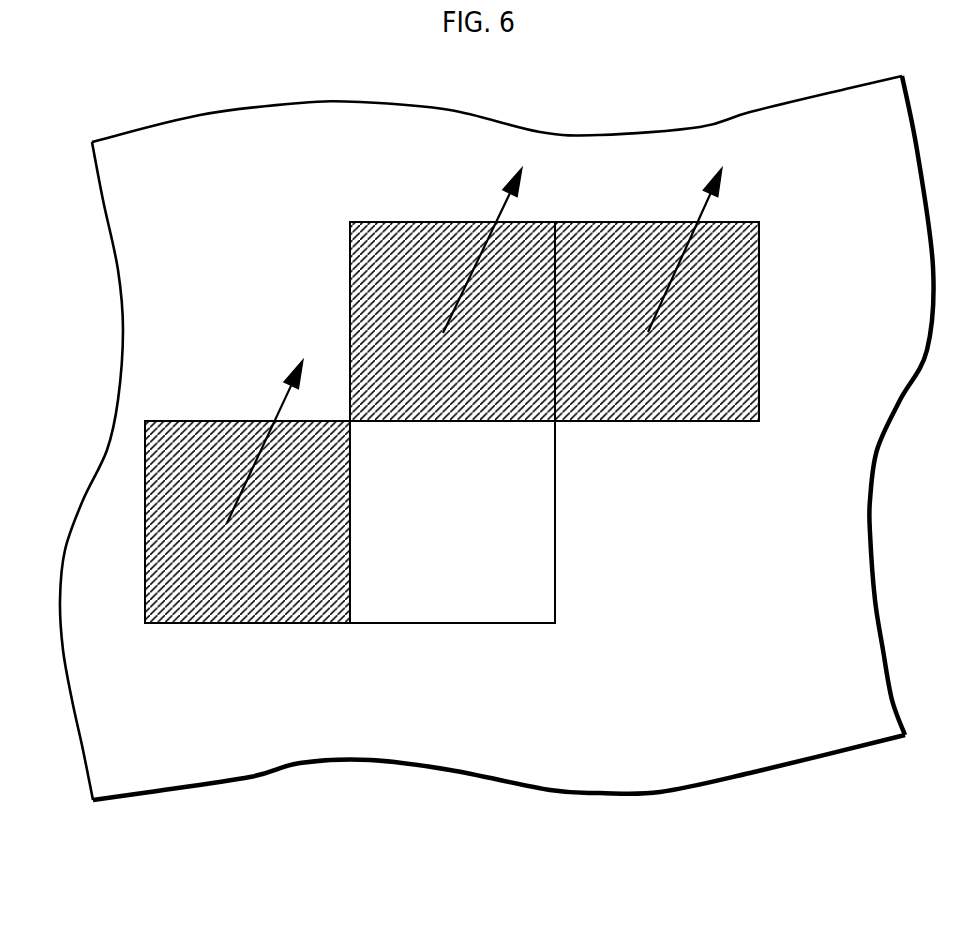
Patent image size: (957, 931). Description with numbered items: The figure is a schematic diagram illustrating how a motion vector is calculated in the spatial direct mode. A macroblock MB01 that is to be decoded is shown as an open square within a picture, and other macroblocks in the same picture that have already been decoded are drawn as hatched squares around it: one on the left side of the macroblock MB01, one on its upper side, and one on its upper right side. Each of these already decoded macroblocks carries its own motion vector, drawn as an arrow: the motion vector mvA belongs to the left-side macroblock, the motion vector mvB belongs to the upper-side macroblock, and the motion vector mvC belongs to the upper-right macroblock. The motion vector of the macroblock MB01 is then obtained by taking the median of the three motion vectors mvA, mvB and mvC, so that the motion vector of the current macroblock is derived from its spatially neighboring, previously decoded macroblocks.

The macroblock to be decoded MB01 is at (450, 605).
The motion vector of the MB(A) mvA is at (255, 441).
The motion vector of the MB(B) mvB is at (473, 250).
The motion vector of the MB(C) mvC is at (675, 250).